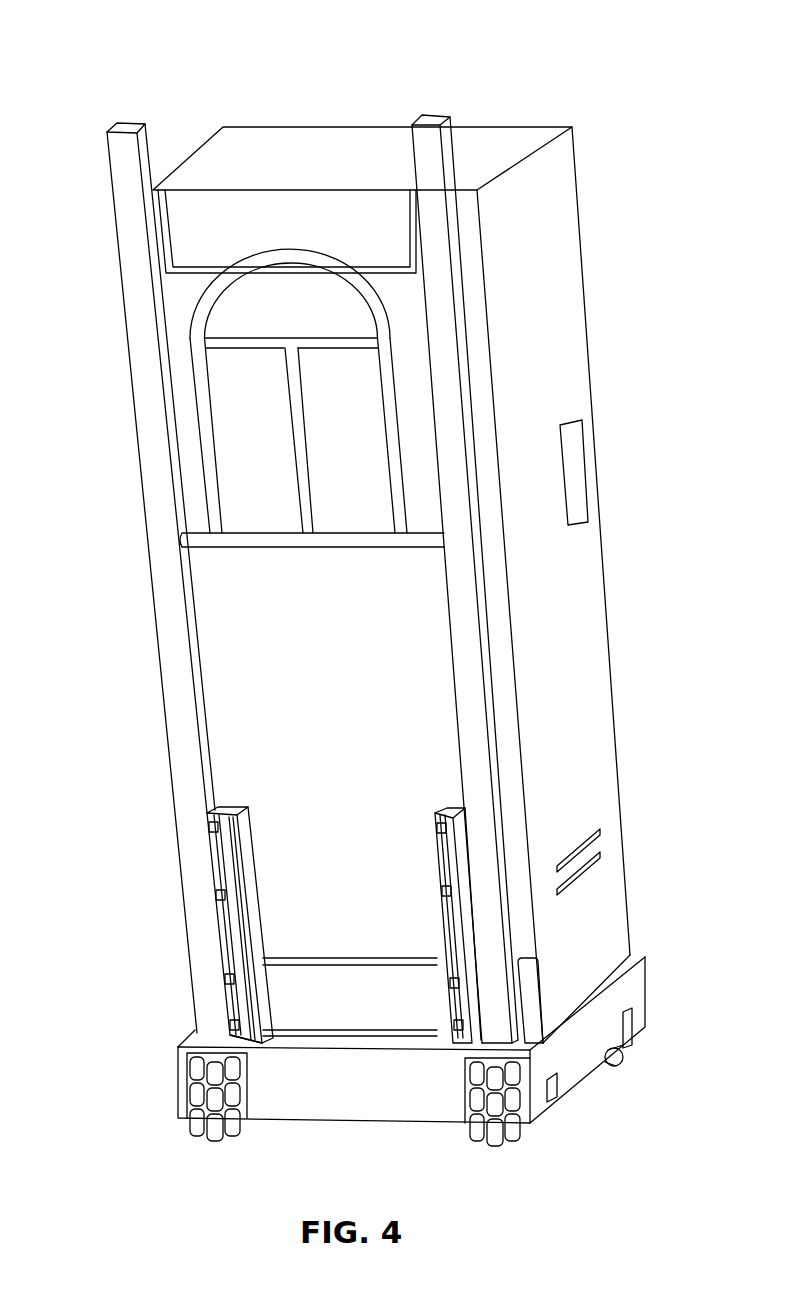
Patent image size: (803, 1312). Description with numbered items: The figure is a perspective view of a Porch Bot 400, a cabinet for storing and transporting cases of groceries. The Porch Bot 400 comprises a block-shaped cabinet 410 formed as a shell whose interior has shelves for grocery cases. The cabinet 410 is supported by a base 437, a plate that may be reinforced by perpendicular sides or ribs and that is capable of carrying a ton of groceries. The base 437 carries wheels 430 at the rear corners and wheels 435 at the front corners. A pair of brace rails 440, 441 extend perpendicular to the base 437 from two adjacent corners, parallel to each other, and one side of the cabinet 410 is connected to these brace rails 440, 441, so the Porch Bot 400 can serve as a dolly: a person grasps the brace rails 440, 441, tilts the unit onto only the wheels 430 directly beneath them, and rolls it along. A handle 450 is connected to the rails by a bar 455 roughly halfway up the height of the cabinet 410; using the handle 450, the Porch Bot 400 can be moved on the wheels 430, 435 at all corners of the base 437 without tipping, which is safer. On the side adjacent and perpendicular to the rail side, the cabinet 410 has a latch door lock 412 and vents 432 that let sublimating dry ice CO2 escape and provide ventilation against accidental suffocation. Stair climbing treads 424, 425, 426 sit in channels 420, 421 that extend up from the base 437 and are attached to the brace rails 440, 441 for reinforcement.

The Porch Bot 400 is at (114, 40).
The cabinet 410 is at (600, 545).
The latch door lock 412 is at (573, 474).
The channel 420 is at (212, 945).
The channel 421 is at (437, 920).
The stair climbing tread 424 is at (207, 827).
The stair climbing tread 425 is at (212, 897).
The stair climbing tread 426 is at (218, 983).
The wheel 430 is at (217, 1133).
The vent 432 is at (600, 850).
The wheel 435 is at (622, 1068).
The base 437 is at (625, 985).
The brace rail 440 is at (480, 695).
The brace rail 441 is at (150, 383).
The handle 450 is at (200, 347).
The bar 455 is at (185, 540).